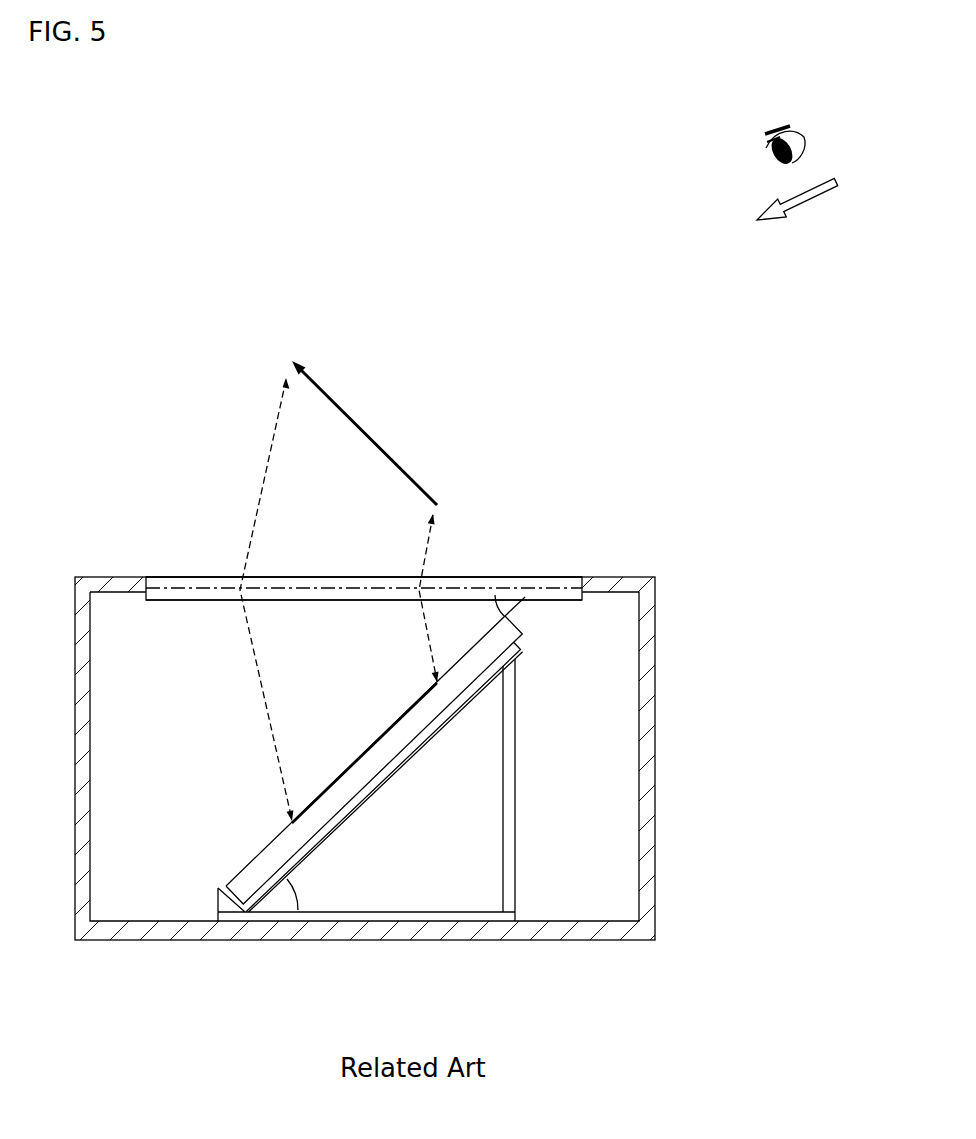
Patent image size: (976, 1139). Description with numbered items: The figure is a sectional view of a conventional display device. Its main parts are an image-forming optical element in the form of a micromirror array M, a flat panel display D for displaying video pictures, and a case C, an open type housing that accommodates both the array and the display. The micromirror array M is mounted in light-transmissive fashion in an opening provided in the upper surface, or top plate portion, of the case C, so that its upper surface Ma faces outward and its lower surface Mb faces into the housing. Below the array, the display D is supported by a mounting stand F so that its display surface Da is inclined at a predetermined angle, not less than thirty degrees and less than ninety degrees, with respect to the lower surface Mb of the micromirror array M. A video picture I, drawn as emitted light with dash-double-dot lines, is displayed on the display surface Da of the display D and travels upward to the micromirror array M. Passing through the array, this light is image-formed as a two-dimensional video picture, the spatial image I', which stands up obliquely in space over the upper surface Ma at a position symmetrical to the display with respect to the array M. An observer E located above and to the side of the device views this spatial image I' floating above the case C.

The case C is at (664, 741).
The micromirror array M is at (201, 570).
The upper surface of micromirror array Ma is at (540, 576).
The lower surface of micromirror array Mb is at (196, 602).
The display D is at (266, 818).
The display surface Da is at (252, 859).
The mounting stand F is at (490, 816).
The video picture I is at (339, 599).
The spatial image I' is at (364, 433).
The observer eye E is at (797, 192).